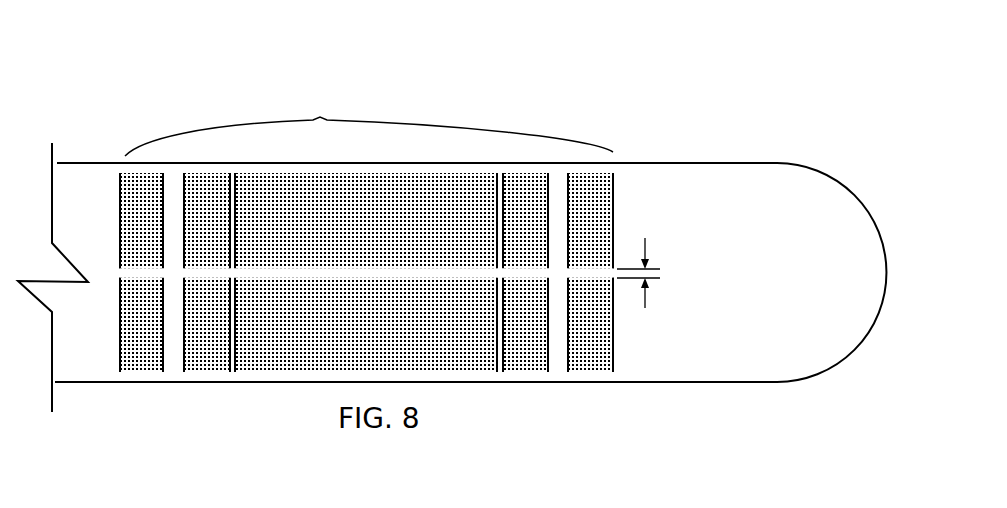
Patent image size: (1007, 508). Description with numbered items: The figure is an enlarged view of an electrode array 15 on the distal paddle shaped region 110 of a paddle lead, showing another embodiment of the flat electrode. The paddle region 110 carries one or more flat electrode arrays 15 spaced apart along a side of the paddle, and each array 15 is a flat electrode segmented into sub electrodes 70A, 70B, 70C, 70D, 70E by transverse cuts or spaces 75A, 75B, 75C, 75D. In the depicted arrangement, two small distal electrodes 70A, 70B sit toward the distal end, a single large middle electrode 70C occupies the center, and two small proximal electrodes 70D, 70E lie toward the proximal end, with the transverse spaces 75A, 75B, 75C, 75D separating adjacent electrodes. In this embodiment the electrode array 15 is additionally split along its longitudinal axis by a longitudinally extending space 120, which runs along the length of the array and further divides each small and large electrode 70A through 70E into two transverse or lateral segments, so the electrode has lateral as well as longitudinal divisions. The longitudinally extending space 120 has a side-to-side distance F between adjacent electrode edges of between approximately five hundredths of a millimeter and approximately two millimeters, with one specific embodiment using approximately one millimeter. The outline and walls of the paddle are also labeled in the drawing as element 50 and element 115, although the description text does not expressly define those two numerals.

The electrode array 15 is at (369, 126).
The distal tip 50 is at (849, 190).
The small distal electrode 70A is at (585, 285).
The small distal electrode 70B is at (523, 285).
The large middle electrode 70C is at (427, 285).
The small proximal electrode 70D is at (208, 285).
The small proximal electrode 70E is at (140, 285).
The transverse space 75A is at (555, 366).
The transverse space 75B is at (497, 368).
The transverse space 75C is at (230, 368).
The transverse space 75D is at (172, 368).
The paddle region 110 is at (295, 110).
The catheter wall 115 is at (73, 379).
The longitudinally extending space 120 is at (328, 277).